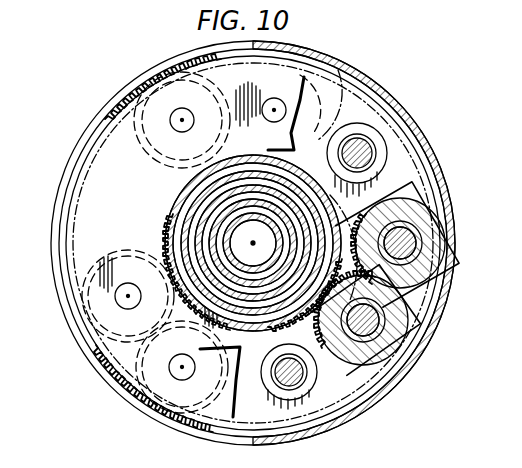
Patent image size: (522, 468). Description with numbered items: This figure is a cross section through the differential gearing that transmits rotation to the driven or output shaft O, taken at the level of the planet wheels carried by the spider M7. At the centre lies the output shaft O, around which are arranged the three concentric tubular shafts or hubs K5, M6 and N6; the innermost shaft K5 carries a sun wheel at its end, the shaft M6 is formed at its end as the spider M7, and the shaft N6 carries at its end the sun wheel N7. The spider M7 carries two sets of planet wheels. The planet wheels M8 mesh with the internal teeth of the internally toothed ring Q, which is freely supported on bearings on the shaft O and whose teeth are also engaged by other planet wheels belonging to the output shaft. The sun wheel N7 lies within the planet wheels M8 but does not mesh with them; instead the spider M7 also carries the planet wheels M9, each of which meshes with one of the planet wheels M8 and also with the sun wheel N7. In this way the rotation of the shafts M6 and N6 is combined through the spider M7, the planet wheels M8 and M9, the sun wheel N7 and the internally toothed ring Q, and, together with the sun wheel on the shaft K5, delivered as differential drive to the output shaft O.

The planet wheels M8 is at (133, 414).
The planet wheels M9 is at (305, 77).
The spider M7 is at (343, 115).
The tubular shaft M6 is at (193, 207).
The tubular shaft N6 is at (173, 230).
The sun wheel N7 is at (150, 255).
The driven or output shaft O is at (300, 235).
The tubular shaft K5 is at (370, 212).
The internally toothed ring Q is at (339, 67).